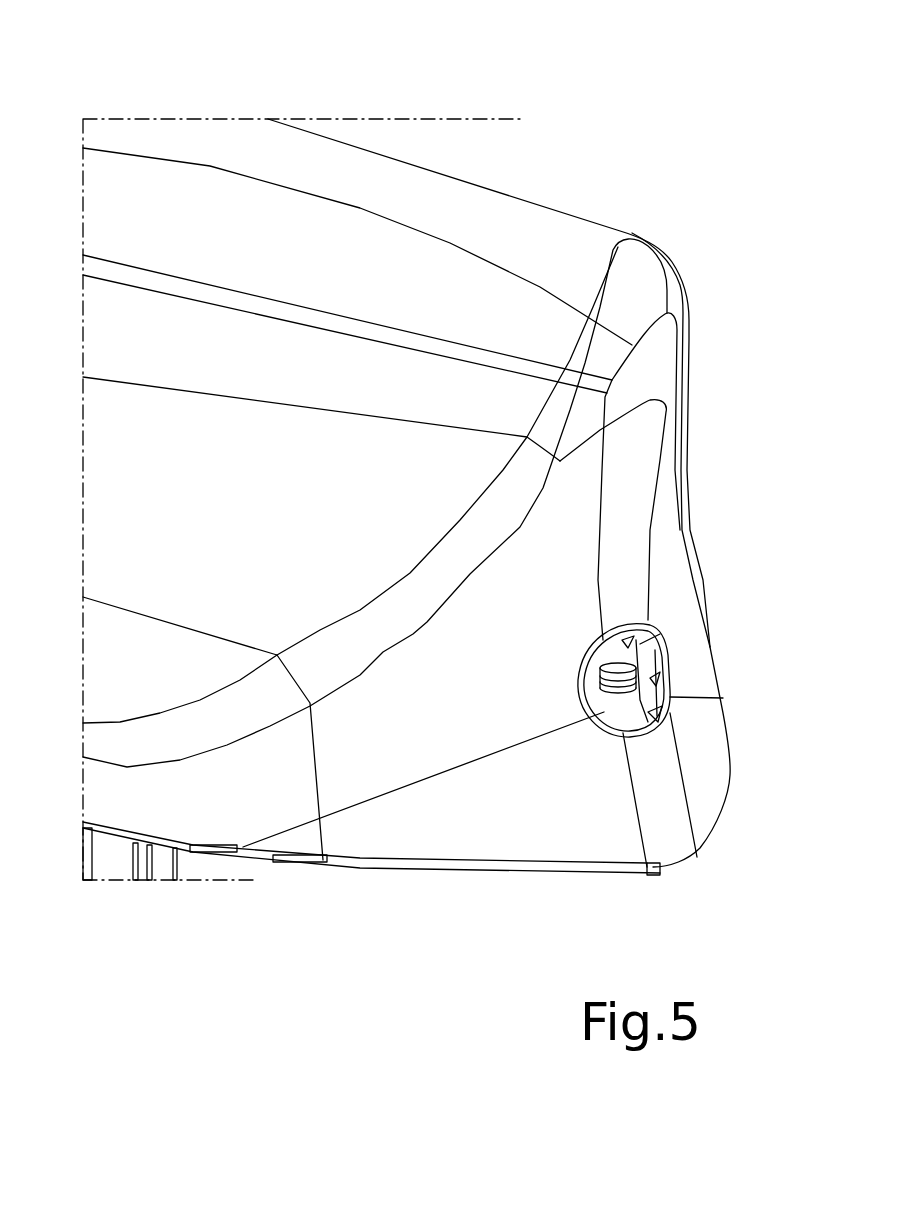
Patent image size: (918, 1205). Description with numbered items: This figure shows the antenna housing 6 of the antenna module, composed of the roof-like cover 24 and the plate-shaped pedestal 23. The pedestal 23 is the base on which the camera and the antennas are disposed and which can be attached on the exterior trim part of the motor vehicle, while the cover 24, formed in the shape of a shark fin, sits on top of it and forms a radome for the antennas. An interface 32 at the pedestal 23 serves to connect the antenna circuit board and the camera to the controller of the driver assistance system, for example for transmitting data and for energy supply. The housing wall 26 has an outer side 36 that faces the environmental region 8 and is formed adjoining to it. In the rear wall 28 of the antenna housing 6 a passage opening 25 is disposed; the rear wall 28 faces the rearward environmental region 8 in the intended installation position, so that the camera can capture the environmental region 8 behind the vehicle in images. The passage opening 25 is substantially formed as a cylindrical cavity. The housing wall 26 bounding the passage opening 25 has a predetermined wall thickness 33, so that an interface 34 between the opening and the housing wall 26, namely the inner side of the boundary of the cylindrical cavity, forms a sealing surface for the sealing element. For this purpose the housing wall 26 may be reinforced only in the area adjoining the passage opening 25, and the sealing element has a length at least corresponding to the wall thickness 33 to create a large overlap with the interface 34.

The antenna housing 6 is at (780, 419).
The environmental region 8 is at (838, 509).
The pedestal 23 is at (625, 877).
The cover 24 is at (604, 200).
The passage opening 25 is at (615, 641).
The housing wall 26 is at (690, 352).
The rear wall 28 is at (713, 782).
The interface 32 is at (182, 872).
The wall thickness 33 is at (672, 657).
The interface 34 is at (658, 718).
The outer side 36 is at (658, 491).